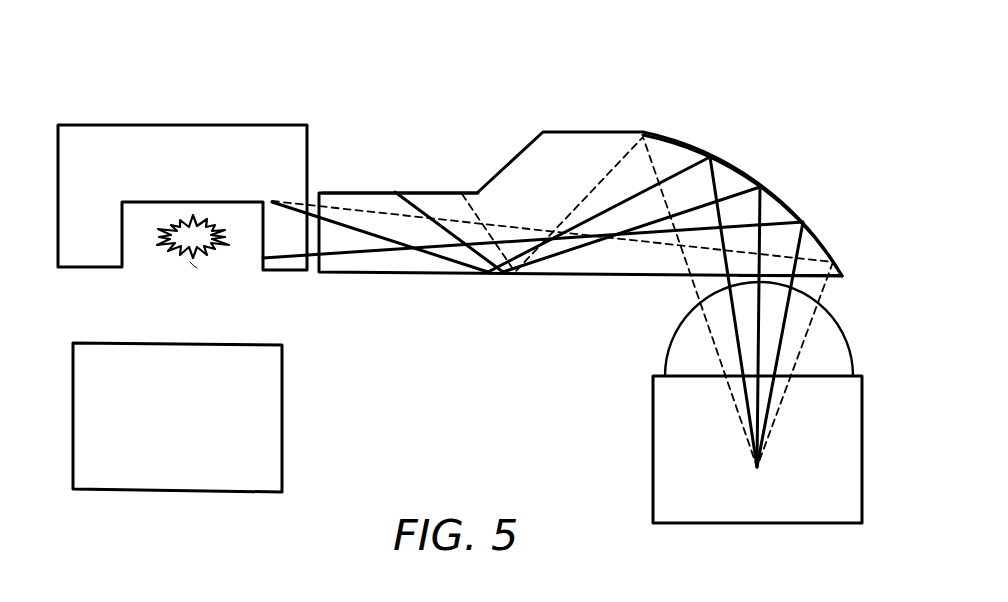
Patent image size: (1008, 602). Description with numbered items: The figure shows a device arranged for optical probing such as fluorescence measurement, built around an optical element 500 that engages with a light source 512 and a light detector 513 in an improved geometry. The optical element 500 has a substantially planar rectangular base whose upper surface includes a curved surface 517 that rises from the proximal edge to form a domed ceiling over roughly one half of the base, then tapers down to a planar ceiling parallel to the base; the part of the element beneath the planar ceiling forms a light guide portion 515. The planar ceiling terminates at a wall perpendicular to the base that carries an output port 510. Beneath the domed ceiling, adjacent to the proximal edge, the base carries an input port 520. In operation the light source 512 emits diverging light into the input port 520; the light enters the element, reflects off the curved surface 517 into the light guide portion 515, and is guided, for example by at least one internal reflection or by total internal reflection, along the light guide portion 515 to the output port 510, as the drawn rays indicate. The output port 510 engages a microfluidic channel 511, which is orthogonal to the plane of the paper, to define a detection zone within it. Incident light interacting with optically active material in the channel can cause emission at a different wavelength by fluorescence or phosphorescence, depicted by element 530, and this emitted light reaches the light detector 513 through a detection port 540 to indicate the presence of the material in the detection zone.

The optical element 500 is at (358, 86).
The output port 510 is at (320, 243).
The microfluidic channel 511 is at (140, 215).
The light source 512 is at (653, 383).
The light detector 513 is at (282, 357).
The light guide portion 515 is at (322, 176).
The curved surface 517 is at (740, 168).
The input port 520 is at (773, 277).
The fluorescence or phosphorescence emission process 530 is at (193, 220).
The detection port 540 is at (197, 270).